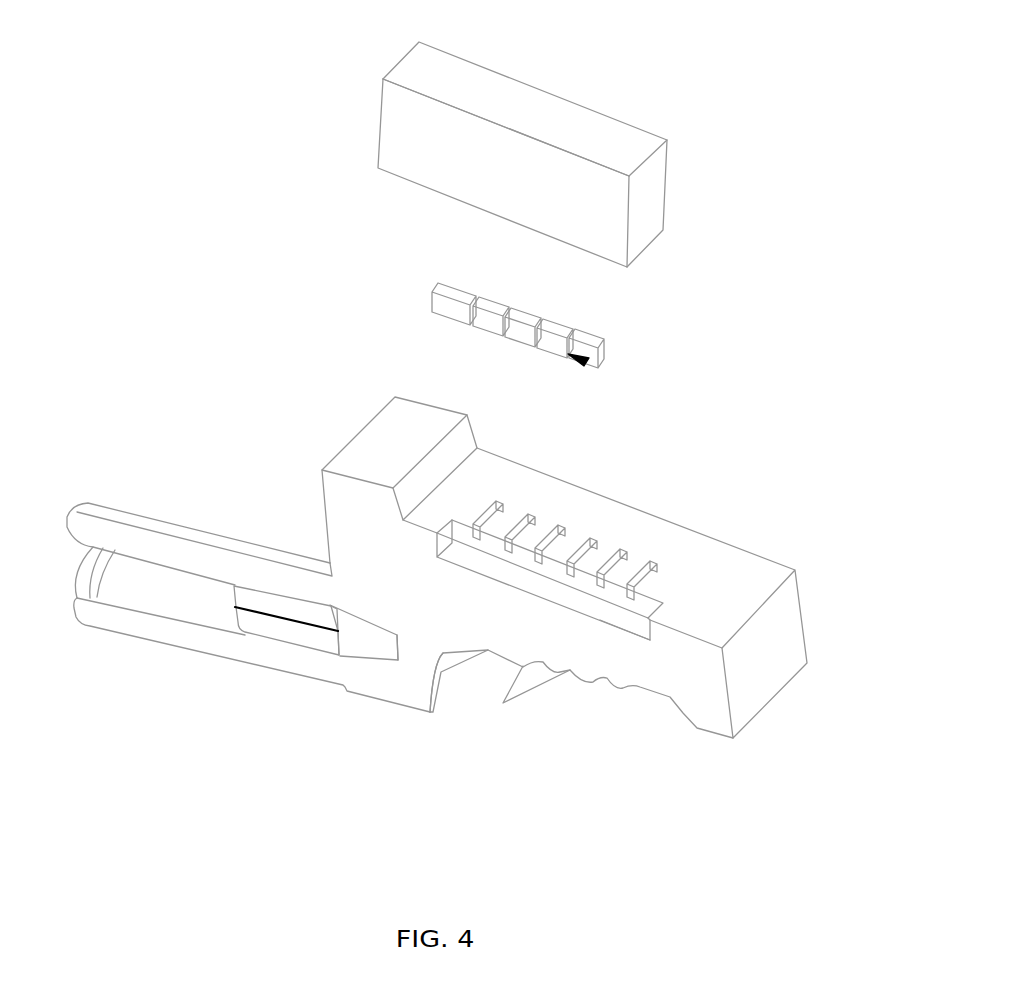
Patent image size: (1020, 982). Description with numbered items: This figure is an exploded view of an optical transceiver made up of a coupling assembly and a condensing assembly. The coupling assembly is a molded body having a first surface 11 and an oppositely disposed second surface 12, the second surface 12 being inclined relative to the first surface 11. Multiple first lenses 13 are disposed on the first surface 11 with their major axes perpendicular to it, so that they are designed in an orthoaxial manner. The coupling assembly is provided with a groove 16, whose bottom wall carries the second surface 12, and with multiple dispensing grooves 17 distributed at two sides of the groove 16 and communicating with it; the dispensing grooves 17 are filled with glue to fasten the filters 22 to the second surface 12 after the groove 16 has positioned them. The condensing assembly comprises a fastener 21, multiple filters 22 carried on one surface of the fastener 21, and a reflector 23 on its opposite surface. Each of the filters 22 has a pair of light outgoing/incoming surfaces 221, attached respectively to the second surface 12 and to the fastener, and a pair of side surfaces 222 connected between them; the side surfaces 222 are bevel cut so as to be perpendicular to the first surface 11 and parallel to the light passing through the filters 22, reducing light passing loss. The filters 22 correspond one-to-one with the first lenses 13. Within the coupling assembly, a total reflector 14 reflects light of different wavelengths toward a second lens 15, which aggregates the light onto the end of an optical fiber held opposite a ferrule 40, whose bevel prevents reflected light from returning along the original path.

The first surface 11 is at (652, 688).
The second surface 12 is at (527, 583).
The first lenses 13 is at (500, 691).
The total reflector 14 is at (441, 658).
The second lens 15 is at (397, 657).
The groove 16 is at (630, 603).
The dispensing grooves 17 is at (650, 567).
The fastener 21 is at (423, 142).
The filters 22 is at (564, 335).
The light outgoing/incoming surfaces 221 is at (587, 345).
The side surfaces 222 is at (598, 373).
The reflector 23 is at (493, 92).
The ferrule 40 is at (283, 630).